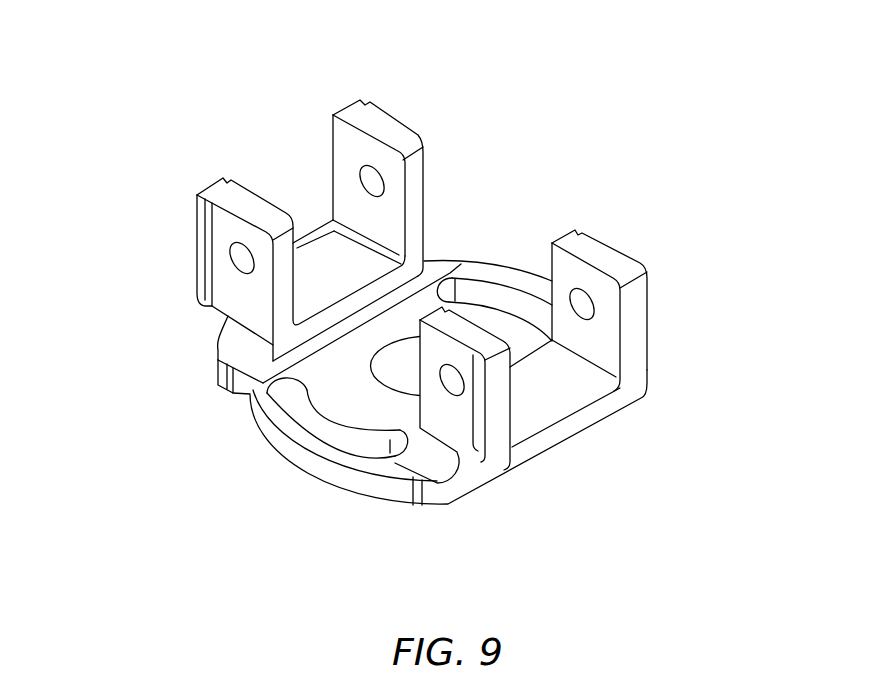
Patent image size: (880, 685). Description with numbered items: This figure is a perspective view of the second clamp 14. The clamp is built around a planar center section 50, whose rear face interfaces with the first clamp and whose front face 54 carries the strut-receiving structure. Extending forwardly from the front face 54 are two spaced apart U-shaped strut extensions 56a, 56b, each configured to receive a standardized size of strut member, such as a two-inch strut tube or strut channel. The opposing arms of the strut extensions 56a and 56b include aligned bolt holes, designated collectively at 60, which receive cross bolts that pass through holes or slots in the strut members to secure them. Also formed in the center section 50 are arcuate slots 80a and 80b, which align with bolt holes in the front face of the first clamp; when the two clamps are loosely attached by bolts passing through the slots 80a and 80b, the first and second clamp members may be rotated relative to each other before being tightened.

The second clamp 14 is at (472, 262).
The center section 50 is at (343, 489).
The front face 54 is at (347, 385).
The strut extension 56a is at (383, 132).
The strut extension 56b is at (597, 257).
The bolt holes 60 is at (242, 258).
The arcuate slot 80a is at (298, 408).
The arcuate slot 80b is at (487, 293).